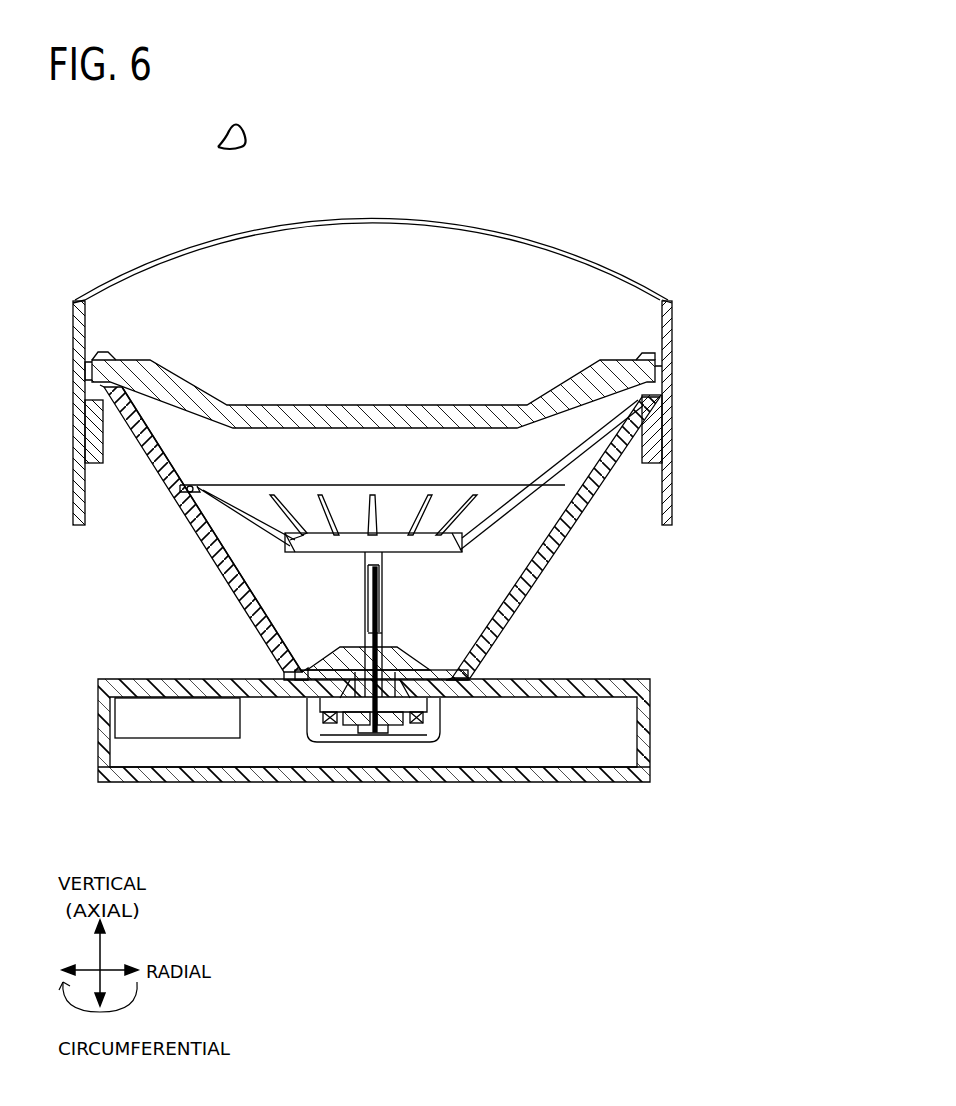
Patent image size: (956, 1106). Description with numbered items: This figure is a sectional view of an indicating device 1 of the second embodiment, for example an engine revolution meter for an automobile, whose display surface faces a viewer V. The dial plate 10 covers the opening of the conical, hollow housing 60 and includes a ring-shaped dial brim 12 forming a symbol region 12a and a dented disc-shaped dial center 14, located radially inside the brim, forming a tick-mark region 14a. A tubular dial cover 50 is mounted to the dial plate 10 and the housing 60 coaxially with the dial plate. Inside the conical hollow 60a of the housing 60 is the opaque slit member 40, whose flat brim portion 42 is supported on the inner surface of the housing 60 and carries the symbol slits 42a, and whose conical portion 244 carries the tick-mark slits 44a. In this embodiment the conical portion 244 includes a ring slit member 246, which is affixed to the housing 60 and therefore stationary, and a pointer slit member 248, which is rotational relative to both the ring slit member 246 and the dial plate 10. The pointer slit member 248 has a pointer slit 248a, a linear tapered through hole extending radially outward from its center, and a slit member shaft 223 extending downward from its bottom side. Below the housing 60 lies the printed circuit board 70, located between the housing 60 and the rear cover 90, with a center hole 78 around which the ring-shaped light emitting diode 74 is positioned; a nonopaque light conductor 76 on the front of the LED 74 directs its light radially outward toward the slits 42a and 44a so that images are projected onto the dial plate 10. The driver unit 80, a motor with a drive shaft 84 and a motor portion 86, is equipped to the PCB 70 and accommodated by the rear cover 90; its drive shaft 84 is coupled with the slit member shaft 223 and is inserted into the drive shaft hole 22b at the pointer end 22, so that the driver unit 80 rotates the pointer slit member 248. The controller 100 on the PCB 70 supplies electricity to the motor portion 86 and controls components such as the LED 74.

The viewer V is at (248, 122).
The indicating device 1 is at (389, 519).
The dial plate 10 is at (370, 372).
The dial brim 12 is at (620, 344).
The symbol region 12a is at (122, 352).
The dial center 14 is at (488, 392).
The tick-mark region 14a is at (186, 372).
The pointer end 22 is at (366, 602).
The drive shaft hole 22b is at (366, 625).
The slit member shaft 223 is at (364, 578).
The slit member 40 is at (420, 520).
The brim portion 42 is at (556, 477).
The symbol slit 42a is at (180, 510).
The tick-mark slit 44a is at (274, 497).
The conical portion 244 is at (446, 475).
The ring slit member 246 is at (473, 540).
The pointer slit member 248 is at (440, 552).
The pointer slit 248a is at (318, 547).
The dial cover 50 is at (674, 302).
The housing 60 is at (408, 532).
The conical hollow 60a is at (280, 623).
The printed circuit board 70 is at (628, 702).
The light emitting diode 74 is at (456, 672).
The light conductor 76 is at (413, 656).
The center hole 78 is at (428, 706).
The driver unit 80 is at (436, 744).
The drive shaft 84 is at (325, 742).
The motor portion 86 is at (392, 745).
The rear cover 90 is at (633, 790).
The controller 100 is at (135, 741).